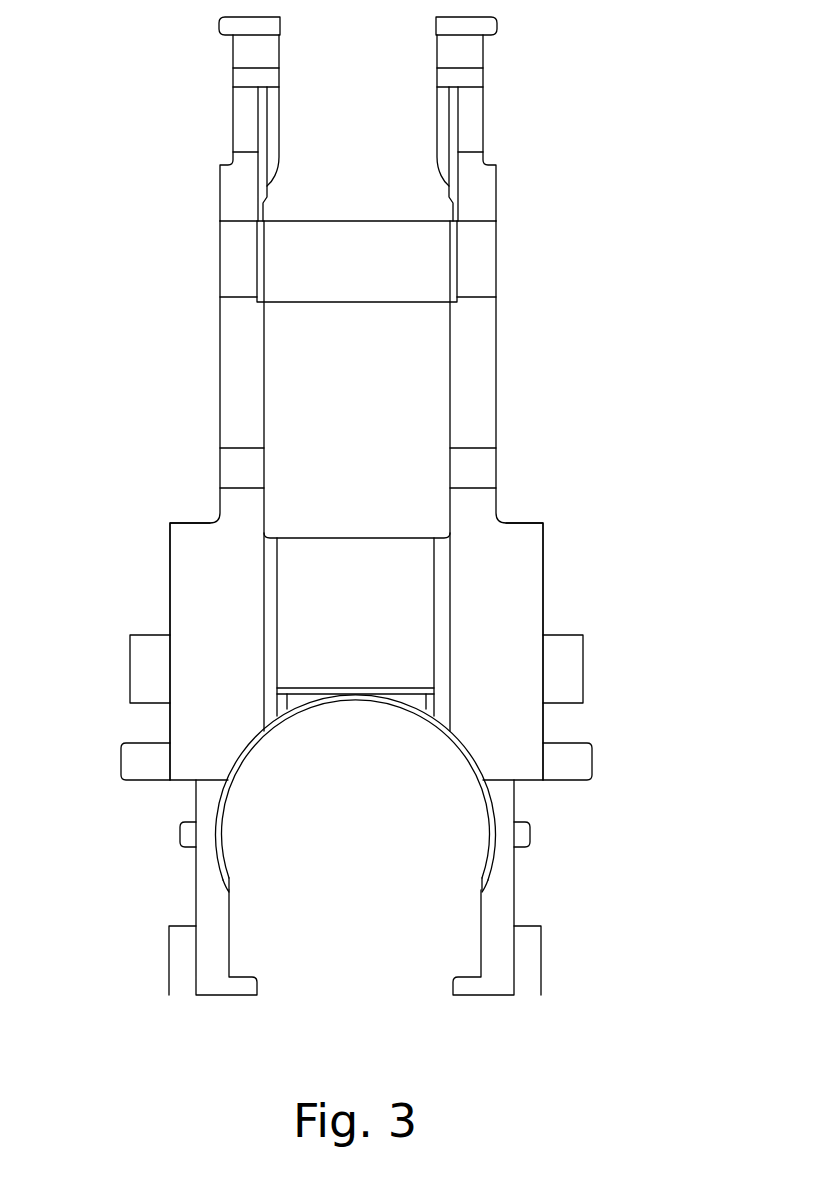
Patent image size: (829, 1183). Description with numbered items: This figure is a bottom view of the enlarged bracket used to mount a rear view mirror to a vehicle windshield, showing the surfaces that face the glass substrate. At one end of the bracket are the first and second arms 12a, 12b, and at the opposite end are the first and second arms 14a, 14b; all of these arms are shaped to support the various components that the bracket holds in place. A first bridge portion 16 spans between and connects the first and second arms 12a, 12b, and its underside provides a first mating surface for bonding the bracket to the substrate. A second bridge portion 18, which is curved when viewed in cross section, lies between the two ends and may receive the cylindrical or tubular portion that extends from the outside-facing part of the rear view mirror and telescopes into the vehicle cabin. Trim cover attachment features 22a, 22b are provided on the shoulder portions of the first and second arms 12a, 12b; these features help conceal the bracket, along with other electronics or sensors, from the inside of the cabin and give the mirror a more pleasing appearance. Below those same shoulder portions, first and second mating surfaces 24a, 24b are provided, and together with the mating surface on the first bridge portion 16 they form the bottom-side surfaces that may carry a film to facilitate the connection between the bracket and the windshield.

The first arm 12a is at (473, 113).
The second arm 12b is at (245, 111).
The first arm 14a is at (498, 960).
The second arm 14b is at (208, 951).
The first bridge portion 16 is at (425, 250).
The second bridge portion 18 is at (382, 573).
The trim cover attachment feature 22a is at (575, 765).
The trim cover attachment feature 22b is at (127, 762).
The first mating surface 24a is at (497, 600).
The second mating surface 24b is at (203, 576).